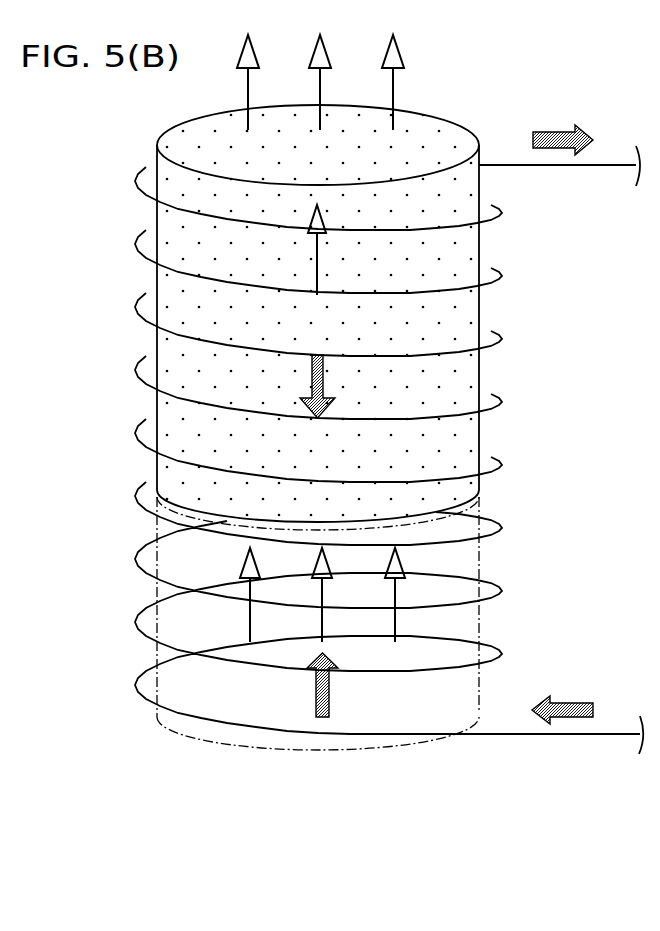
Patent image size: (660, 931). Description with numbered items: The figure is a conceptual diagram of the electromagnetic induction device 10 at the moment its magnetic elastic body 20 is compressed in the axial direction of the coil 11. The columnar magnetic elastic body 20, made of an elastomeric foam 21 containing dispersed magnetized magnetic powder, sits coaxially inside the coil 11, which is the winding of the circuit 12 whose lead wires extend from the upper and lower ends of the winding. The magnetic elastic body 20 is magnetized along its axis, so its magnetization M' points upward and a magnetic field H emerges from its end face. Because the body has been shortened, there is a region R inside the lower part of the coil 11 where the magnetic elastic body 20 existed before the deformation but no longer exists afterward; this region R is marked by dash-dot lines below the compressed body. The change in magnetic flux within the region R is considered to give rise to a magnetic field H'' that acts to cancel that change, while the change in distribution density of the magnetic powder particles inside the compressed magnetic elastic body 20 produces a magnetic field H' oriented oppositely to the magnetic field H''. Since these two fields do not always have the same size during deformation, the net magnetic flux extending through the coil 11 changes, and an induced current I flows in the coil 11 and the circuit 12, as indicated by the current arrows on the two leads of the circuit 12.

The electromagnetic induction device 10 is at (457, 75).
The coil 11 is at (142, 168).
The circuit 12 is at (614, 170).
The magnetic elastic body 20 is at (482, 313).
The elastomeric foam 21 is at (456, 244).
The region R is at (482, 548).
The magnetic field H is at (331, 338).
The induced current I is at (545, 95).
The magnetization M' is at (332, 250).
The magnetic field H' is at (334, 386).
The magnetic field H'' is at (300, 686).